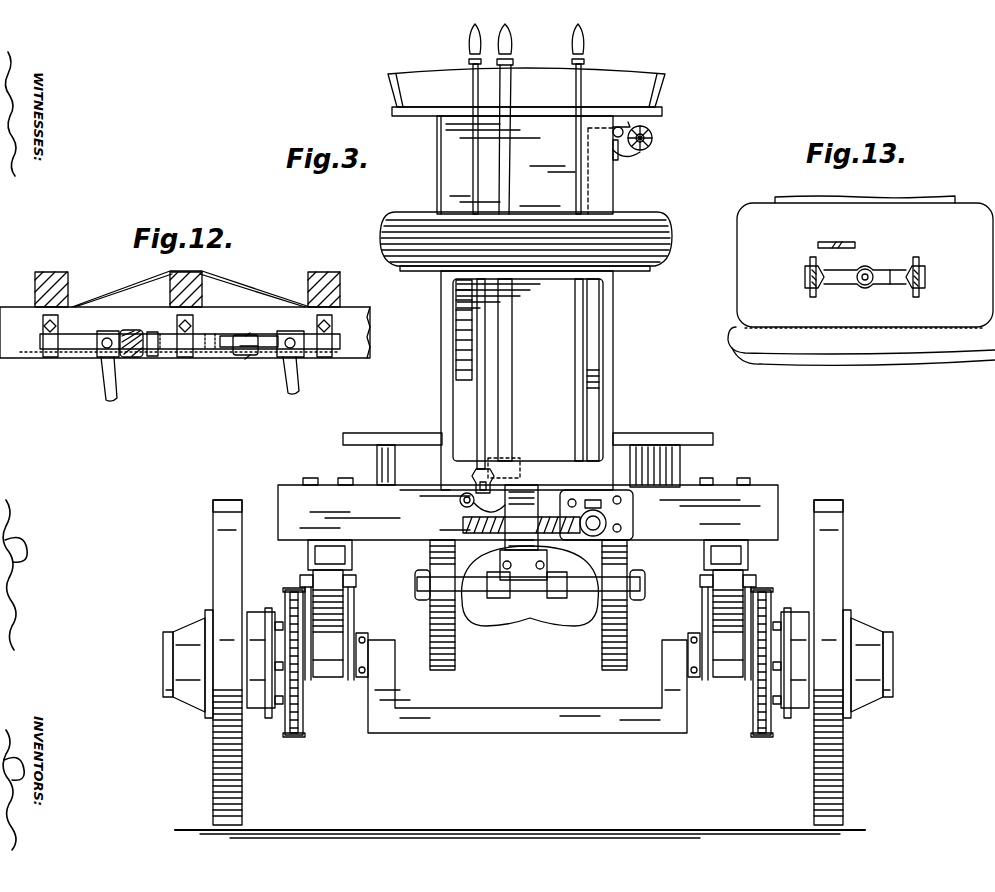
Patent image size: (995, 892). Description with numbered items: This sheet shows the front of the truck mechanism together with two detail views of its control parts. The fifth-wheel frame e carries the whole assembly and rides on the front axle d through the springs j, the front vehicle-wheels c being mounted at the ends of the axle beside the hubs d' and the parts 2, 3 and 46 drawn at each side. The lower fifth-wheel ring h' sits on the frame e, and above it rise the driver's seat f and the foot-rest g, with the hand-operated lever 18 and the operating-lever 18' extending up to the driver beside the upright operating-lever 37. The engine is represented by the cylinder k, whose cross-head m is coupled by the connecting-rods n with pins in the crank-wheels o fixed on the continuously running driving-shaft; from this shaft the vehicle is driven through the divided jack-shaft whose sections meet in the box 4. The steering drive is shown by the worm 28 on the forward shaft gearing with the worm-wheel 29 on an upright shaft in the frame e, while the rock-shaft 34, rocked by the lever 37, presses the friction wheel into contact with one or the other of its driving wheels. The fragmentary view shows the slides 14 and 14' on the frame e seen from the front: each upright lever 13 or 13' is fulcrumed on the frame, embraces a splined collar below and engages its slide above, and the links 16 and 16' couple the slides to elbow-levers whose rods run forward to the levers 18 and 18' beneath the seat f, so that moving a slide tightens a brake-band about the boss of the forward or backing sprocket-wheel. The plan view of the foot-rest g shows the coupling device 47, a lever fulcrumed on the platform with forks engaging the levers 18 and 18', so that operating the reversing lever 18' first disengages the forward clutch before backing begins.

In FIG. 3, the driver's seat f is at (526, 92).
In FIG. 3, the foot-rest g is at (672, 240).
In FIG. 13, the foot-rest g is at (861, 339).
In FIG. 3, the hand-operated lever 18 is at (483, 386).
In FIG. 13, the hand-operated lever 18 is at (792, 277).
In FIG. 3, the operating-lever 18' is at (575, 370).
In FIG. 13, the operating-lever 18' is at (940, 277).
In FIG. 3, the upright operating-lever 37 is at (512, 414).
In FIG. 13, the upright operating-lever 37 is at (845, 242).
In FIG. 3, the lower fifth-wheel ring h' is at (528, 446).
In FIG. 3, the fifth-wheel frame e is at (528, 509).
In FIG. 12, the fifth-wheel frame e is at (185, 305).
In FIG. 3, the worm-wheel 29 is at (548, 517).
In FIG. 3, the worm 28 is at (603, 523).
In FIG. 3, the rock-shaft 34 is at (460, 507).
In FIG. 3, the cylinder k is at (530, 586).
In FIG. 3, the cross-head m is at (579, 590).
In FIG. 3, the connecting-rods n is at (420, 571).
In FIG. 3, the crank-wheels o is at (430, 608).
In FIG. 3, the springs j is at (340, 584).
In FIG. 3, the front axle d is at (528, 683).
In FIG. 3, the front vehicle-wheels c is at (214, 552).
In FIG. 3, the hub d' is at (528, 664).
In FIG. 3, the bearing 46 is at (262, 714).
In FIG. 3, the sprocket 2 is at (289, 612).
In FIG. 3, the flange 3 is at (293, 589).
In FIG. 12, the slide 14 is at (190, 334).
In FIG. 12, the slide 14' is at (250, 328).
In FIG. 12, the upright lever 13 is at (120, 366).
In FIG. 12, the upright lever 13' is at (305, 362).
In FIG. 12, the link 16 is at (153, 357).
In FIG. 12, the link 16' is at (254, 359).
In FIG. 13, the box 4 is at (862, 285).
In FIG. 13, the coupling device 47 is at (891, 286).